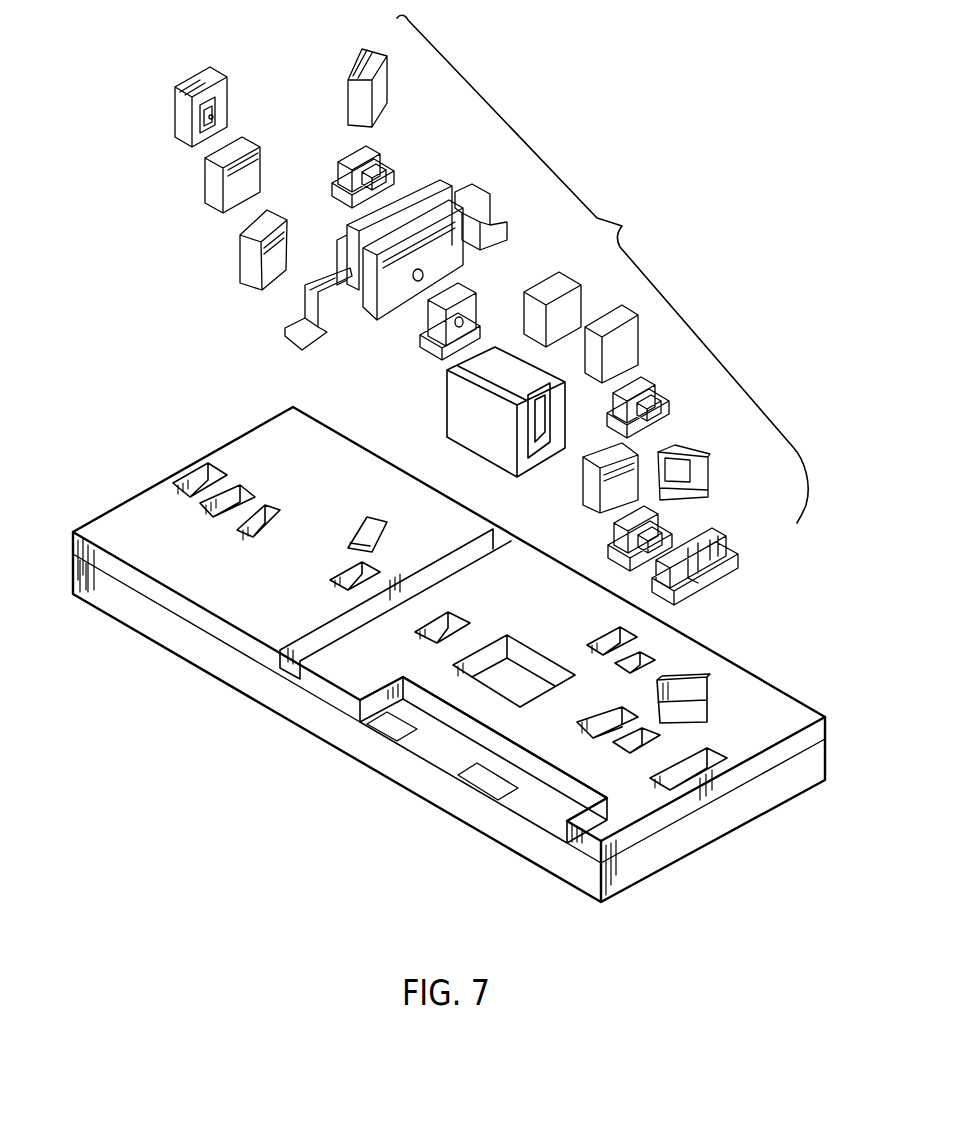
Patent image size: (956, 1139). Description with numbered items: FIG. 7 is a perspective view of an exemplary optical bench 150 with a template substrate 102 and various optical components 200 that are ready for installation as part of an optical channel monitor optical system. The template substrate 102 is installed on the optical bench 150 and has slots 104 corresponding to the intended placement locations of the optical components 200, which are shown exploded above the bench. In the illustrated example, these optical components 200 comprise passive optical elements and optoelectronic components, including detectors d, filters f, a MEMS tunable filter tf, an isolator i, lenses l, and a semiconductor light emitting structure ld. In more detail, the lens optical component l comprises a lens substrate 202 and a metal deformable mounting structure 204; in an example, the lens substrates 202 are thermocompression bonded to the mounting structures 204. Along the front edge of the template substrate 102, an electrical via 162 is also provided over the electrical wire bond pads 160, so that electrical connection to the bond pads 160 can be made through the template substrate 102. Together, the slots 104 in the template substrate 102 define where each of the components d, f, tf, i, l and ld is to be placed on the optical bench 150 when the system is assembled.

The template substrate 102 is at (822, 729).
The optical bench 150 is at (807, 771).
The slots 104 is at (358, 535).
The electrical wire bond pads 160 is at (430, 748).
The electrical via 162 is at (570, 786).
The optical components 200 is at (570, 269).
The lens substrate 202 is at (668, 538).
The metal deformable mounting structure 204 is at (630, 519).
The detectors d is at (348, 100).
The filters f is at (240, 240).
The MEMS tunable filter tf is at (460, 194).
The lens l is at (458, 298).
The isolator i is at (470, 398).
The semiconductor light emitting structure ld is at (697, 454).